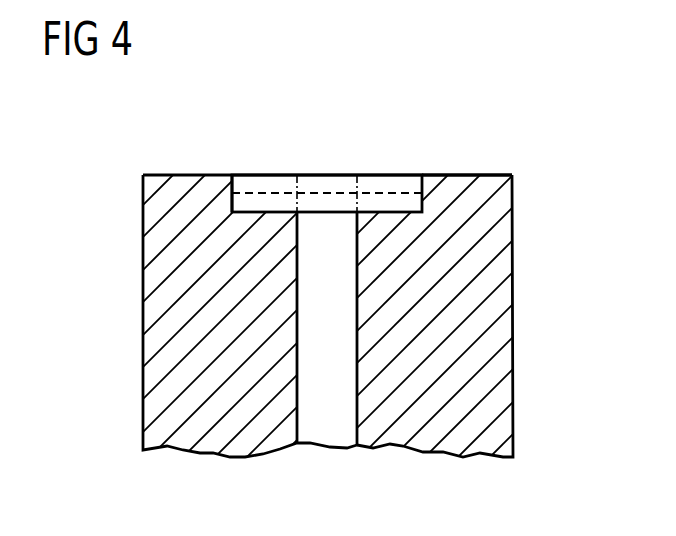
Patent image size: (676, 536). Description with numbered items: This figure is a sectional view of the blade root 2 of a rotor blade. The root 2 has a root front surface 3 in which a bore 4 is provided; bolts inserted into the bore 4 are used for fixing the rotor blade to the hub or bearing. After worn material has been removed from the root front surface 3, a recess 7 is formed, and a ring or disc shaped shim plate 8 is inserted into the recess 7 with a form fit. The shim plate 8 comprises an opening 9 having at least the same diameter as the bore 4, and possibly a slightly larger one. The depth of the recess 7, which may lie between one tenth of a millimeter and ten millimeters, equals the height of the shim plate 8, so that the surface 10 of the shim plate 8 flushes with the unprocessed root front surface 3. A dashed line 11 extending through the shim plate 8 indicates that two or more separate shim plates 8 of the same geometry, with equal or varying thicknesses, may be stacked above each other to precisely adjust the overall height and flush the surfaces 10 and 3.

The root 2 is at (153, 310).
The root front surface 3 is at (188, 175).
The bore 4 is at (357, 248).
The recess 7 is at (247, 213).
The shim plate 8 is at (469, 166).
The opening 9 is at (325, 180).
The surface 10 is at (385, 175).
The dashed line 11 is at (260, 193).